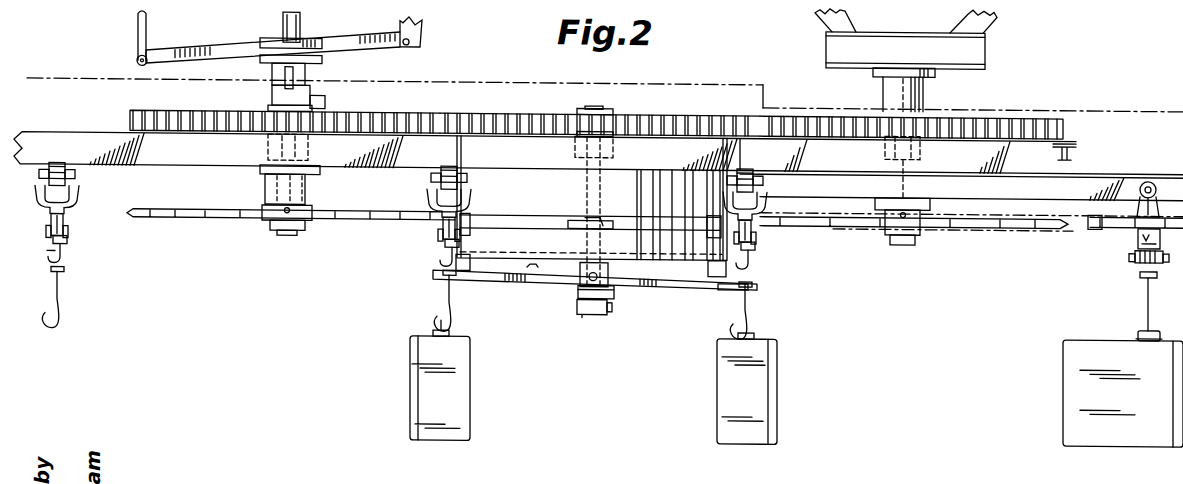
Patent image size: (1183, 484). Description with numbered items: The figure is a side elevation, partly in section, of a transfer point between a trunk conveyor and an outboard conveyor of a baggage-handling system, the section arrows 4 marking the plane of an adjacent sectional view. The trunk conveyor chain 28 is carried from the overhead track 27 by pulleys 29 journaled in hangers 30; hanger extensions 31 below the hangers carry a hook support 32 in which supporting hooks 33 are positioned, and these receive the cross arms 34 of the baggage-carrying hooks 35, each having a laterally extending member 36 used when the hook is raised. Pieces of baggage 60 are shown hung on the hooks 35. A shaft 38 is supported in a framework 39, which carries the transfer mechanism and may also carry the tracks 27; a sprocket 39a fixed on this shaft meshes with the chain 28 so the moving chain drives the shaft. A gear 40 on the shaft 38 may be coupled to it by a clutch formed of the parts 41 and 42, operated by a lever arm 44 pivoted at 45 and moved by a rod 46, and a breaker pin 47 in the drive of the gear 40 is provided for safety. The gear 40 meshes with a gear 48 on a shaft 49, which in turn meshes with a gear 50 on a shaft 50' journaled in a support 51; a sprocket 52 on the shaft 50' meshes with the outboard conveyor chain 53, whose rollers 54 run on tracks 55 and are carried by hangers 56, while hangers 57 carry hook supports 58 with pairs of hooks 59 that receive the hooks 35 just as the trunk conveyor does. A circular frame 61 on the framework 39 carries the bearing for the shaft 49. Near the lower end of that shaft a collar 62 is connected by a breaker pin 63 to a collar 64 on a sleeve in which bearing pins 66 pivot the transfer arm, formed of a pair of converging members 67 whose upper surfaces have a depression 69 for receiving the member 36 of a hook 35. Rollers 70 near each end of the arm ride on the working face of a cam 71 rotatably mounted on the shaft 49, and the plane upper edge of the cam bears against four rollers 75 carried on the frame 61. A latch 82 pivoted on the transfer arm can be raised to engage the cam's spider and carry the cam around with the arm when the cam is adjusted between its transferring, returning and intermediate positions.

The section line 4- 4 is at (27, 74).
The tracks 27 is at (40, 197).
The chains 28 is at (48, 215).
The pulleys 29 is at (45, 175).
The hangers 30 is at (75, 189).
The hanger extensions 31 is at (64, 225).
The hook support 32 is at (66, 238).
The hooks 33 is at (60, 257).
The cross arms 34 is at (48, 252).
The baggage-carrying hooks 35 is at (62, 310).
The laterally extending member 36 is at (52, 268).
The shaft 38 is at (300, 14).
The framework 39 is at (62, 138).
The sprocket 39a is at (352, 218).
The gear 40 is at (168, 115).
The clutch part 41 is at (272, 93).
The clutch part 42 is at (272, 70).
The lever arm 44 is at (228, 41).
The pivot 45 is at (422, 30).
The rod 46 is at (149, 22).
The breaker pin 47 is at (322, 93).
The gear 48 is at (533, 118).
The shaft 49 is at (598, 100).
The gear 50 is at (911, 113).
The shaft 50' is at (901, 168).
The support or framework 51 is at (908, 27).
The sprocket 52 is at (950, 218).
The outboard conveyor chains 53 is at (1092, 218).
The rollers 54 is at (752, 165).
The tracks 55 is at (1095, 170).
The hangers 56 is at (763, 195).
The hangers 57 is at (760, 228).
The hook supports 58 is at (758, 240).
The hooks 59 is at (758, 254).
The pieces of baggage 60 is at (470, 390).
The circular frame 61 is at (513, 183).
The collar 62 is at (607, 305).
The breaker pin 63 is at (575, 305).
The collar 64 is at (578, 287).
The bearing pins 66 is at (598, 275).
The transfer arm members 67 is at (500, 283).
The depression 69 is at (752, 282).
The rollers 70 is at (462, 266).
The cam 71 is at (690, 255).
The rollers 75 is at (465, 212).
The latch 82 is at (530, 266).